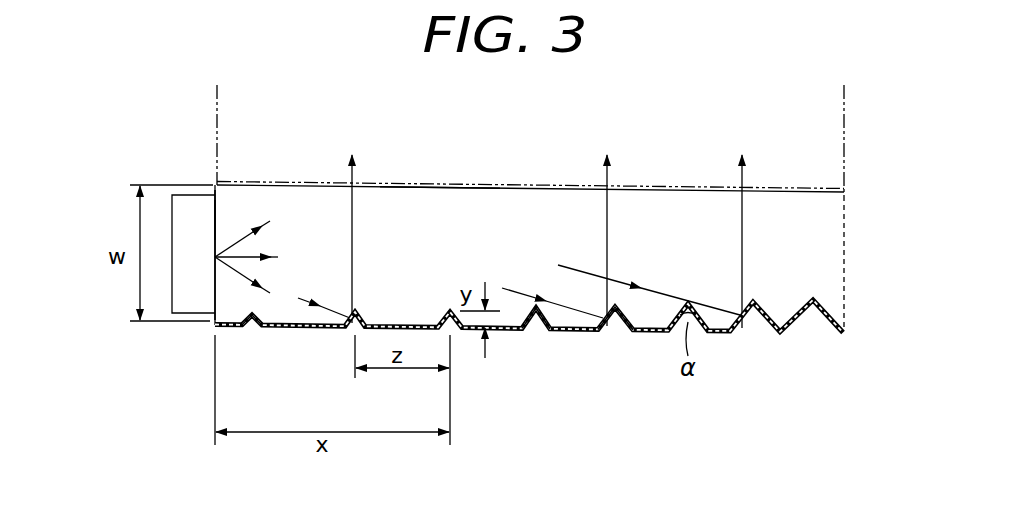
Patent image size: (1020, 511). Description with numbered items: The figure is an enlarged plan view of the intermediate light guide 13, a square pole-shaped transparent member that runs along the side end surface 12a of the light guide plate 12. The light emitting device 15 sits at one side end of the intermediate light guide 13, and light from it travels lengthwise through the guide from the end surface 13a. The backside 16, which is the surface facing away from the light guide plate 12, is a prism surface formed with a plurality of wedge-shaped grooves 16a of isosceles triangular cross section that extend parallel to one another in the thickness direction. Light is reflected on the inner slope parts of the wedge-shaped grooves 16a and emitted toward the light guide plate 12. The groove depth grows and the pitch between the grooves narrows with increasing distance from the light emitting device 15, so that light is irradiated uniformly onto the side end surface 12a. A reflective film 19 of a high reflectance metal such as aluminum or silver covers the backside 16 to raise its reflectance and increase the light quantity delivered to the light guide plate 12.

The light guide plate 12 is at (455, 135).
The side end surface 12a is at (436, 192).
The intermediate light guide 13 is at (233, 200).
The end surface 13a is at (214, 222).
The light emitting device 15 is at (184, 305).
The backside 16 is at (262, 329).
The wedge-shaped grooves 16a is at (538, 323).
The reflective film 19 is at (315, 331).